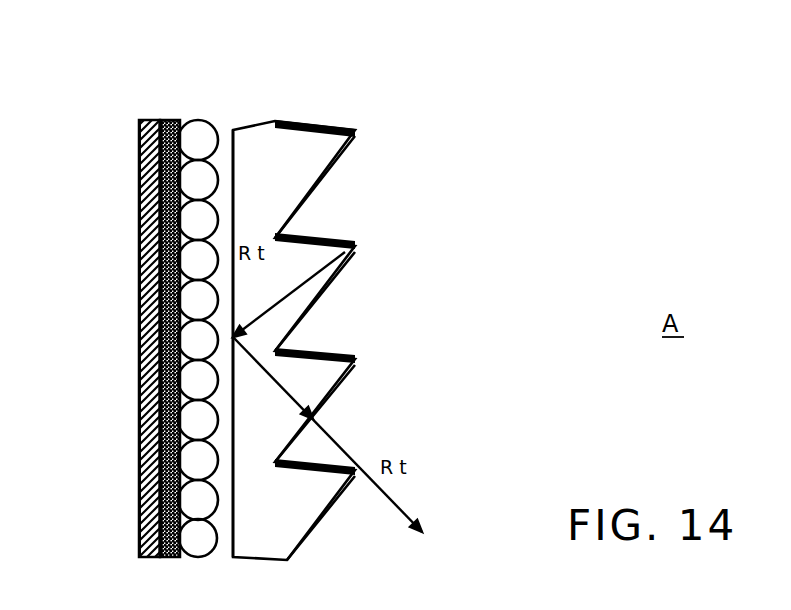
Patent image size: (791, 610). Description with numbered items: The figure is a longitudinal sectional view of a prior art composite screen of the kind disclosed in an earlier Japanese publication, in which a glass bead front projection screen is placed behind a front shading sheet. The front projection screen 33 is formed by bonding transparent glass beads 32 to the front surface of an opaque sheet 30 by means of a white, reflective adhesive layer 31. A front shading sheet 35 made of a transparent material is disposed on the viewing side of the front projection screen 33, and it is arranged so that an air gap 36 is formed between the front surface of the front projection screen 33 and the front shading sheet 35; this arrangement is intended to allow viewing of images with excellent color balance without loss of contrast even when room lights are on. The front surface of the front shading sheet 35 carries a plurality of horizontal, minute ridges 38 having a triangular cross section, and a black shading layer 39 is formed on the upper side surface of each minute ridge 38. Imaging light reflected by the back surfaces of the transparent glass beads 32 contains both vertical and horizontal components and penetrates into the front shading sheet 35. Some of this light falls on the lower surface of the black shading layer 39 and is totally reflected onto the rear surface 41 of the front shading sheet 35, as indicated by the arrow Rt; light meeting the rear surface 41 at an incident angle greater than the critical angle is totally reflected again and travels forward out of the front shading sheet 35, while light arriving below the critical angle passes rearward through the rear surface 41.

The opaque sheet 30 is at (138, 213).
The white, reflective adhesive layer 31 is at (172, 132).
The transparent glass beads 32 is at (196, 134).
The front projection screen 33 is at (130, 514).
The front shading sheet 35 is at (330, 115).
The air gap 36 is at (215, 283).
The minute ridges 38 is at (333, 150).
The black shading layer 39 is at (340, 238).
The rear surface 41 is at (235, 507).